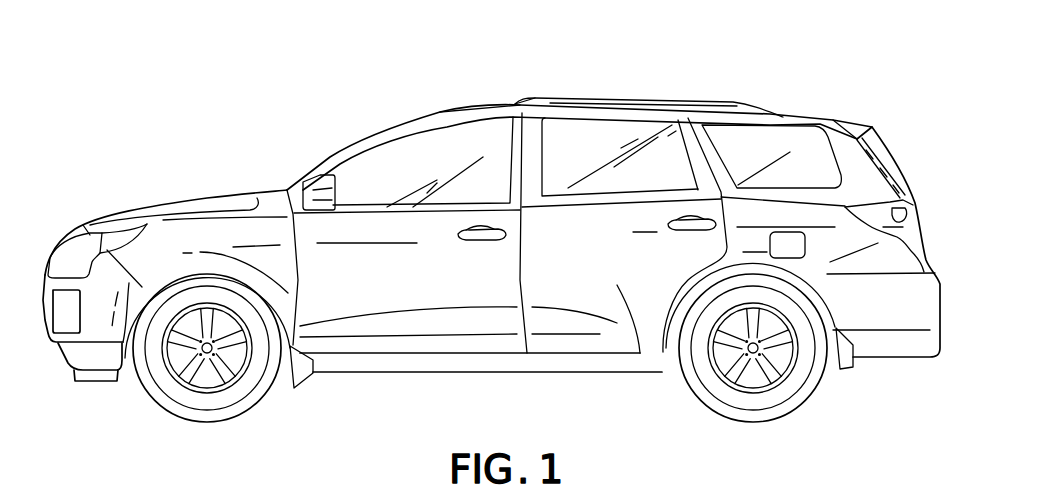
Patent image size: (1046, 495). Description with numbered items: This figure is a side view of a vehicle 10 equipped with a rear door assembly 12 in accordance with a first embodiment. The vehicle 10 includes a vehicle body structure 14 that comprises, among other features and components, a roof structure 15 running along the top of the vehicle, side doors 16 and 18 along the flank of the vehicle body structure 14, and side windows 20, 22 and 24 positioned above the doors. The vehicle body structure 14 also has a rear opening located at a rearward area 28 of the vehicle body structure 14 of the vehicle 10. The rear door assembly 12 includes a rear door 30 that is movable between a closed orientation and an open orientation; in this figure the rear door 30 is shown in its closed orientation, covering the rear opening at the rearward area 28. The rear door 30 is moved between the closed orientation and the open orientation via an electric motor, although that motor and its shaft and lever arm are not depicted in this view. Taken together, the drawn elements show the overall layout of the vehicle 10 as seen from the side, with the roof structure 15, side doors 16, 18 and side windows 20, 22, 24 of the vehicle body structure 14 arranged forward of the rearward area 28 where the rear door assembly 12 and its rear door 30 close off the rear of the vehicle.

The vehicle 10 is at (347, 52).
The rear door assembly 12 is at (876, 155).
The vehicle body structure 14 is at (450, 109).
The roof structure 15 is at (497, 105).
The side door 16 is at (402, 292).
The side door 18 is at (640, 353).
The side window 20 is at (390, 170).
The side window 22 is at (593, 143).
The side window 24 is at (760, 147).
The rearward area 28 is at (820, 117).
The rear door 30 is at (890, 190).